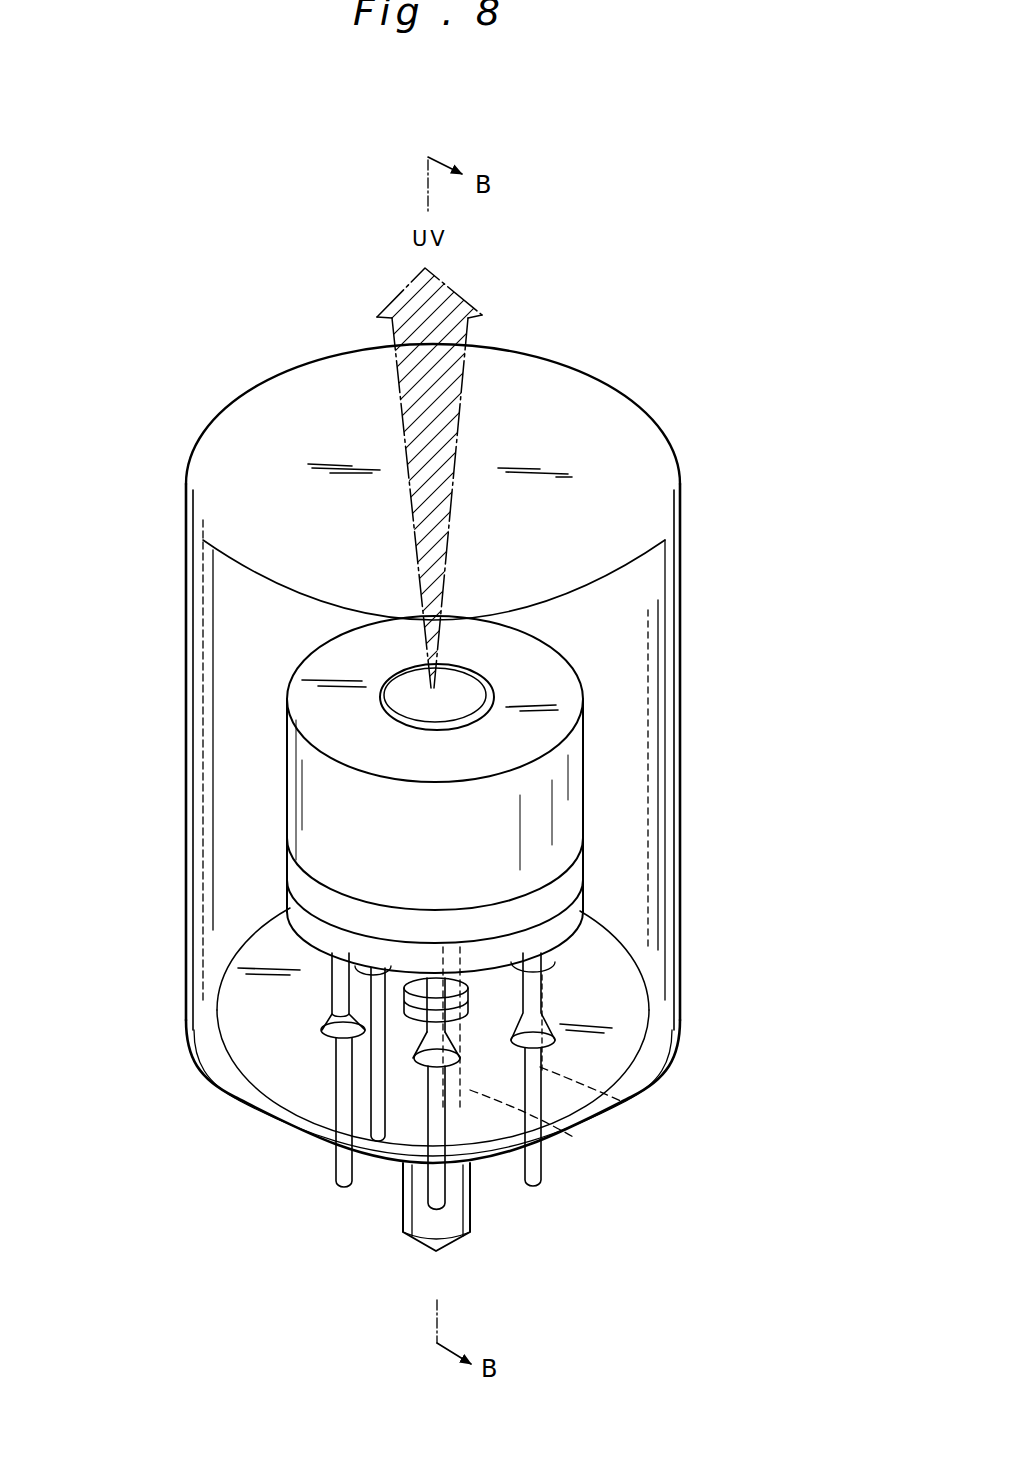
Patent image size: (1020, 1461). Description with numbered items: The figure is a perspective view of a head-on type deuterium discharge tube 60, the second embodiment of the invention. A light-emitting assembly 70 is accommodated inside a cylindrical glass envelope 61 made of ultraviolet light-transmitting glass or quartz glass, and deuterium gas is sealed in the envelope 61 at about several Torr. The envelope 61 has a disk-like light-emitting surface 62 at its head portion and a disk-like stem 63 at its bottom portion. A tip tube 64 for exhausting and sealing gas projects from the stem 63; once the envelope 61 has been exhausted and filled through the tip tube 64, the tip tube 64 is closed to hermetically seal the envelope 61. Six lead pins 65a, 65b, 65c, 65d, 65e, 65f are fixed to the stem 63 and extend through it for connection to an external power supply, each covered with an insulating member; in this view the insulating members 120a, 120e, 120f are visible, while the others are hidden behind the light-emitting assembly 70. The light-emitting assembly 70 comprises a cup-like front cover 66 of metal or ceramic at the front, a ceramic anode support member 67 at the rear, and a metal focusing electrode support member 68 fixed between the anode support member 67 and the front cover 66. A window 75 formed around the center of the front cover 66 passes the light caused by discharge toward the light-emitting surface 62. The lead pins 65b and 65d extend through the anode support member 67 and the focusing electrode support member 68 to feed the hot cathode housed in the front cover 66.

The deuterium discharge tube 60 is at (736, 468).
The cylindrical glass envelope 61 is at (668, 653).
The light-emitting surface 62 is at (640, 438).
The stem 63 is at (623, 1035).
The tip tube 64 is at (458, 1212).
The lead pin 65a is at (544, 1176).
The lead pin 65b is at (645, 1108).
The lead pin 65c is at (580, 1143).
The lead pin 65d is at (377, 1103).
The lead pin 65e is at (336, 1183).
The lead pin 65f is at (437, 1203).
The front cover 66 is at (568, 773).
The anode support member 67 is at (583, 902).
The focusing electrode support member 68 is at (585, 858).
The light-emitting assembly 70 is at (762, 720).
The window 75 is at (402, 693).
The insulating member 120a is at (538, 991).
The insulating member 120e is at (335, 992).
The insulating member 120f is at (426, 1028).